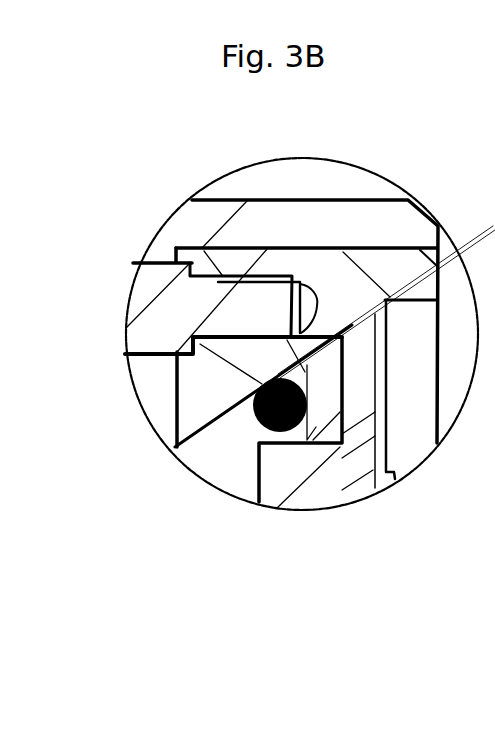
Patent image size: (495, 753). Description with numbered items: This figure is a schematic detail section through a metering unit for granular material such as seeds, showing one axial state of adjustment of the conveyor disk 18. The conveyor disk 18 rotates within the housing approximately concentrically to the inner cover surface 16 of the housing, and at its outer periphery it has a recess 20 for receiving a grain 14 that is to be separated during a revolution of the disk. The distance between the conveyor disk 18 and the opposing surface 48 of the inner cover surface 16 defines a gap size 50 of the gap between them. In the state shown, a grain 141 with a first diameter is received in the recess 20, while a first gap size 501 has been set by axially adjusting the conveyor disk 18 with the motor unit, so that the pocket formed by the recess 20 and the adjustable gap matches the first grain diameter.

The grain 14 is at (239, 486).
The grain with a first diameter 141 is at (265, 422).
The inner cover surface 16 is at (195, 407).
The opposing surface 48 is at (206, 464).
The conveyor disk 18 is at (352, 482).
The recess 20 is at (317, 420).
The gap size 50 is at (335, 297).
The first gap size 501 is at (490, 232).